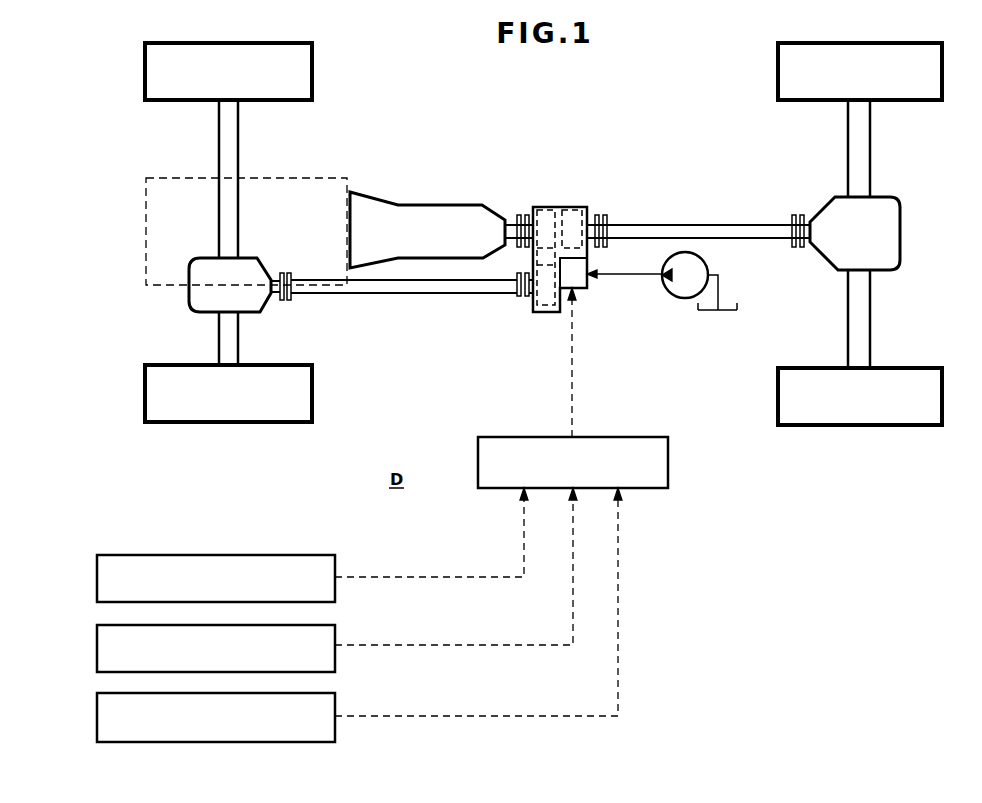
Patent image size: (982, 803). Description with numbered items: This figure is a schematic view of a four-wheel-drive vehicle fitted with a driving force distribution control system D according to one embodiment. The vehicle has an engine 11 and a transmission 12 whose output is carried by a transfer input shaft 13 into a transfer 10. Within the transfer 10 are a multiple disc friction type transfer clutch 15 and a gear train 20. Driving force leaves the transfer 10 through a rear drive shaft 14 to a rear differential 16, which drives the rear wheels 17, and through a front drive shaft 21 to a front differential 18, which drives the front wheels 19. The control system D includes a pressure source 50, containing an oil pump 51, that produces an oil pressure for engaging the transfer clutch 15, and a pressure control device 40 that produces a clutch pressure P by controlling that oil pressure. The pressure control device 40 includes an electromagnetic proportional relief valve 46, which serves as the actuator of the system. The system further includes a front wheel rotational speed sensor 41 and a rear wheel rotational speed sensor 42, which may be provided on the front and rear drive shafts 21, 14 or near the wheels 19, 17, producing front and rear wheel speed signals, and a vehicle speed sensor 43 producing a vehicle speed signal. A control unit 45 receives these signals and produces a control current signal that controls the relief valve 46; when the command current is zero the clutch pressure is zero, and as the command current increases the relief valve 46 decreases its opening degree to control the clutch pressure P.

The transfer 10 is at (581, 247).
The engine 11 is at (300, 178).
The transmission 12 is at (434, 205).
The transfer input shaft 13 is at (513, 218).
The rear drive shaft 14 is at (684, 224).
The multiple disc friction type transfer clutch 15 is at (566, 208).
The rear differential 16 is at (902, 222).
The rear wheels 17 is at (912, 101).
The front differential 18 is at (190, 308).
The front wheels 19 is at (312, 63).
The gear train 20 is at (548, 307).
The front drive shaft 21 is at (418, 297).
The pressure control device 40 is at (530, 424).
The front wheel rotational speed sensor 41 is at (97, 579).
The rear wheel rotational speed sensor 42 is at (97, 645).
The vehicle speed sensor 43 is at (97, 713).
The control unit 45 is at (621, 437).
The electromagnetic proportional relief valve 46 is at (590, 290).
The pressure source 50 is at (672, 305).
The oil pump 51 is at (710, 268).